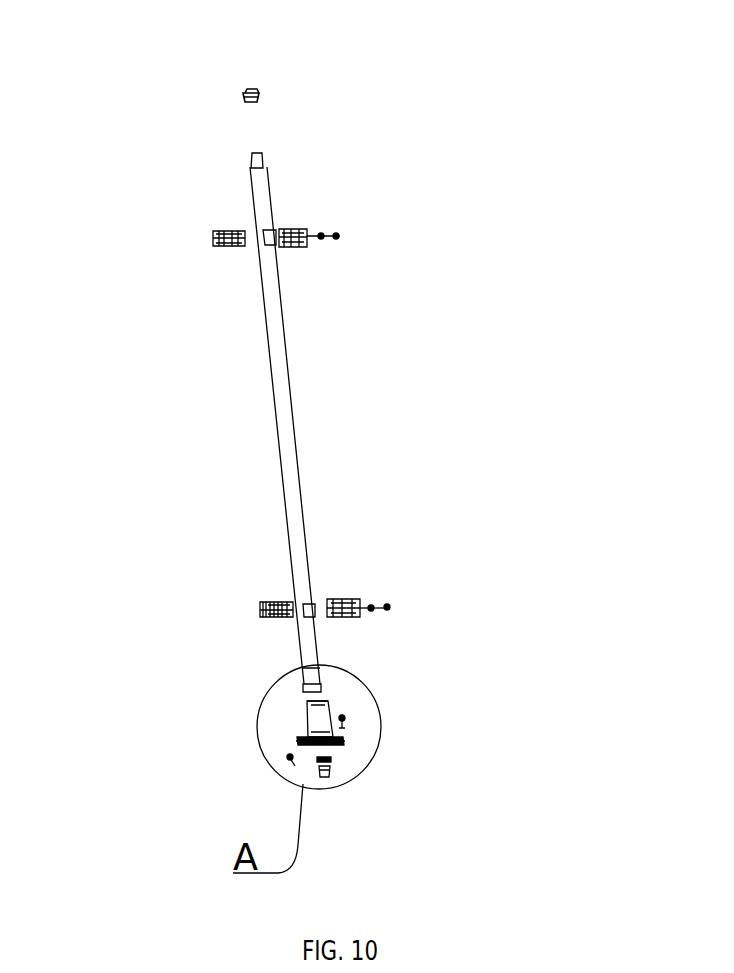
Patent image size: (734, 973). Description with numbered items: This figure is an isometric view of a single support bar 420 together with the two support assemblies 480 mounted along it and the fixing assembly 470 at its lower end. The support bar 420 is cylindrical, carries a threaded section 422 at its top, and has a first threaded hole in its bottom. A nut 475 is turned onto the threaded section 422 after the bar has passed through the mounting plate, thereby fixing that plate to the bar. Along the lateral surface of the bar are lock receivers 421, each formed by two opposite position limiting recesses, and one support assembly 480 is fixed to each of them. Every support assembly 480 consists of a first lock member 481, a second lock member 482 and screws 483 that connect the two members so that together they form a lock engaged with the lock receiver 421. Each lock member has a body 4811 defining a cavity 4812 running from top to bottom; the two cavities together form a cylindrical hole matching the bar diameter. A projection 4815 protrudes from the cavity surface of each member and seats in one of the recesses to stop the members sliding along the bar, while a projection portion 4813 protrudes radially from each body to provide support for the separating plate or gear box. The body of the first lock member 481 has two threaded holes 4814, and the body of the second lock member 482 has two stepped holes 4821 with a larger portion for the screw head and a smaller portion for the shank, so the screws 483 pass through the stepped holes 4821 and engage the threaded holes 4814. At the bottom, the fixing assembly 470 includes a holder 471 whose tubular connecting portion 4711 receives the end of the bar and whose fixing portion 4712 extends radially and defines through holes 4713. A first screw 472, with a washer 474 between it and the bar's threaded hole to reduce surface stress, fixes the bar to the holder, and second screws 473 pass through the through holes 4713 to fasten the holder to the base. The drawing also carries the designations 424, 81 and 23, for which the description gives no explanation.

The nut 475 is at (244, 93).
The threaded section 422 is at (252, 160).
The lock receiver 421 is at (277, 230).
The support bar 420 is at (290, 478).
The support assembly 480 is at (508, 237).
The first lock member 481 is at (241, 249).
The second lock member 482 is at (307, 247).
The screw 483 is at (340, 236).
The lower positioning block 424 is at (320, 600).
The stepped hole 4821 is at (347, 600).
The lower clamp assembly 81 is at (82, 490).
The cavity 4812 is at (278, 603).
The projection 4815 is at (268, 605).
The projection portion 4813 is at (265, 607).
The body 4811 is at (268, 616).
The threaded hole 4814 is at (278, 618).
The rod end collar 23 is at (303, 688).
The fixing assembly 470 is at (597, 915).
The holder 471 is at (472, 642).
The connecting portion 4711 is at (335, 706).
The through hole 4713 is at (343, 738).
The fixing portion 4712 is at (345, 747).
The washer 474 is at (331, 770).
The first screw 472 is at (330, 760).
The second screw 473 is at (292, 759).